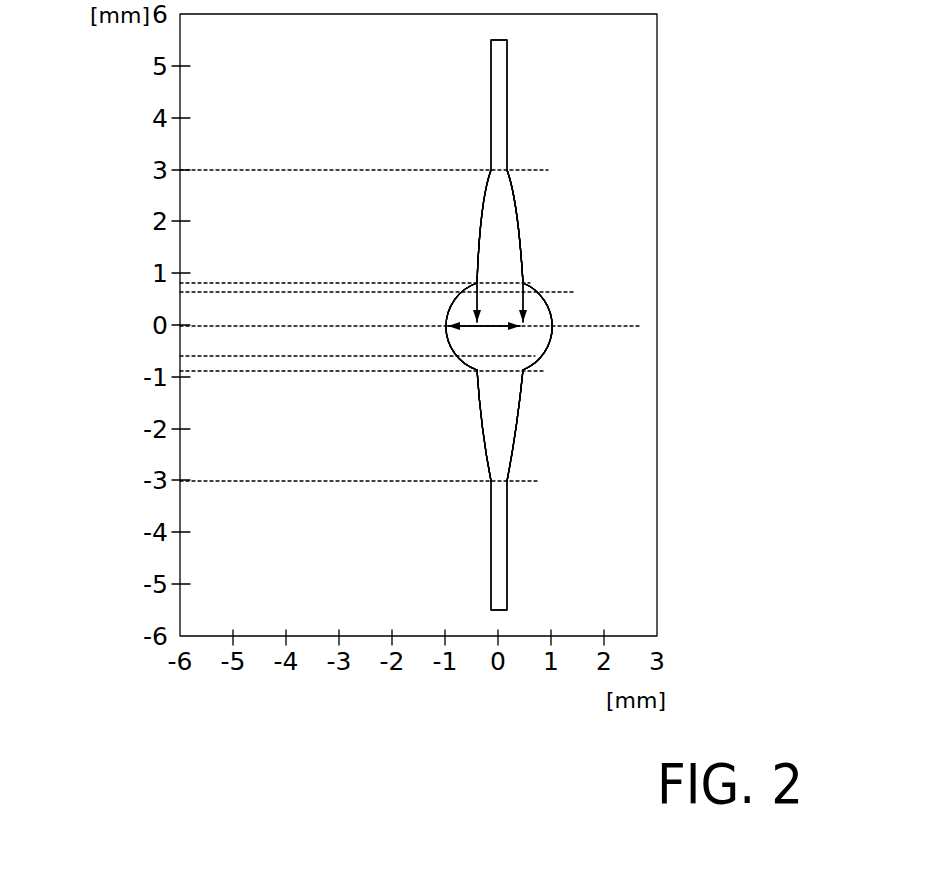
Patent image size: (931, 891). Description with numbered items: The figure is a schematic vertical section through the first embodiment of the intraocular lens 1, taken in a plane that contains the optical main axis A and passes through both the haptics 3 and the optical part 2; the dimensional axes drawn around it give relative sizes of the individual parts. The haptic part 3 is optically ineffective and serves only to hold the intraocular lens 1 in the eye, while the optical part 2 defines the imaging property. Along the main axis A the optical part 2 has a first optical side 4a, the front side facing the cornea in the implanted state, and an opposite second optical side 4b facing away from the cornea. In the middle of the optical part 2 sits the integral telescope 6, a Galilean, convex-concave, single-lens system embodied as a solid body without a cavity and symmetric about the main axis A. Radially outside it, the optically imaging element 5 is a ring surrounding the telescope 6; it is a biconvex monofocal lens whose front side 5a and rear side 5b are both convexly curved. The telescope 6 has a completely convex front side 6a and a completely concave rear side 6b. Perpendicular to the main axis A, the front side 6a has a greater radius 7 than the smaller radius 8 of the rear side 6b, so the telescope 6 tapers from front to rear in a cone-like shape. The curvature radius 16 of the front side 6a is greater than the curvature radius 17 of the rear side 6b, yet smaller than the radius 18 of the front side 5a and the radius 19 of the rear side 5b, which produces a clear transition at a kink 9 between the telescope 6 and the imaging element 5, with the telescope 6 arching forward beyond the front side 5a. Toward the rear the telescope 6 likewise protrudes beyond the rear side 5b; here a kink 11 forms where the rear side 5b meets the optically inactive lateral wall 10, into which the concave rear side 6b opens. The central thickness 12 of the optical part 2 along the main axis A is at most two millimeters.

The intraocular lens 1 is at (518, 99).
The optical part 2 is at (523, 446).
The haptic part 3 is at (487, 100).
The first optical side 4a is at (469, 409).
The second optical side 4b is at (531, 413).
The optically imaging element 5 is at (529, 230).
The front side of optically imaging element 5a is at (478, 245).
The rear side of optically imaging element 5b is at (520, 222).
The telescope 6 is at (454, 369).
The front side of telescope 6a is at (443, 333).
The rear side of telescope 6b is at (539, 345).
The radius of front side 7 is at (474, 291).
The radius of rear side 8 is at (548, 304).
The kink 9 is at (476, 281).
The lateral wall 10 is at (532, 292).
The kink 11 is at (527, 286).
The central thickness 12 is at (474, 322).
The radius of front side curvature 16 is at (447, 358).
The radius of rear side curvature 17 is at (552, 326).
The radius of front side of optically imaging element 18 is at (481, 210).
The radius of rear side of optically imaging element 19 is at (512, 192).
The optical main axis A is at (640, 326).